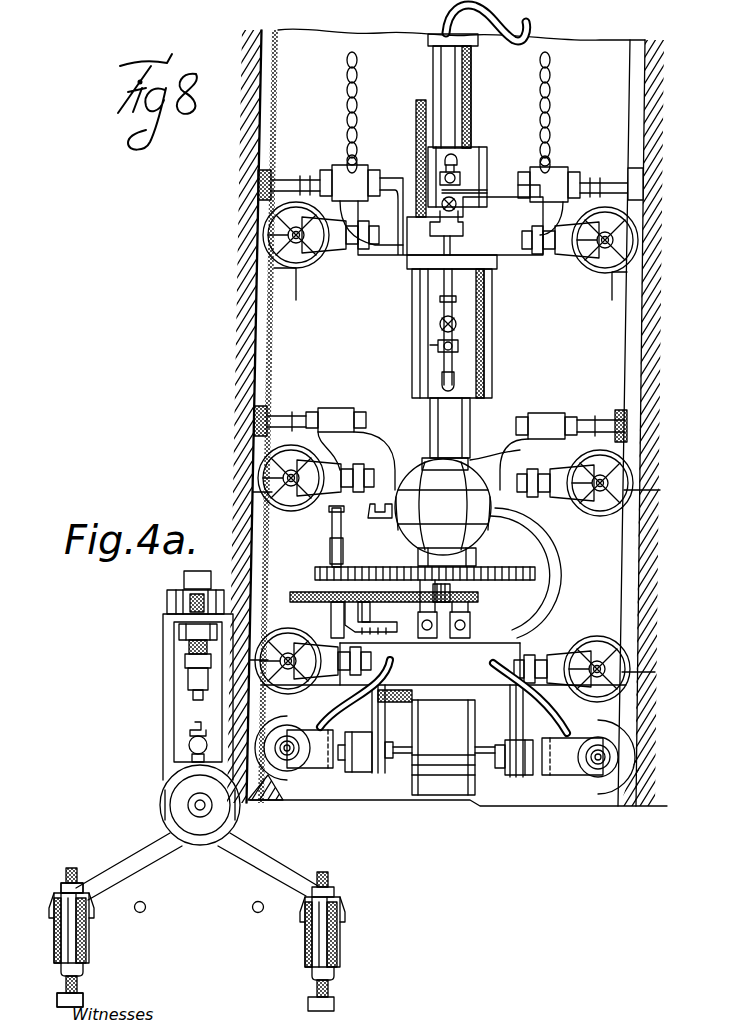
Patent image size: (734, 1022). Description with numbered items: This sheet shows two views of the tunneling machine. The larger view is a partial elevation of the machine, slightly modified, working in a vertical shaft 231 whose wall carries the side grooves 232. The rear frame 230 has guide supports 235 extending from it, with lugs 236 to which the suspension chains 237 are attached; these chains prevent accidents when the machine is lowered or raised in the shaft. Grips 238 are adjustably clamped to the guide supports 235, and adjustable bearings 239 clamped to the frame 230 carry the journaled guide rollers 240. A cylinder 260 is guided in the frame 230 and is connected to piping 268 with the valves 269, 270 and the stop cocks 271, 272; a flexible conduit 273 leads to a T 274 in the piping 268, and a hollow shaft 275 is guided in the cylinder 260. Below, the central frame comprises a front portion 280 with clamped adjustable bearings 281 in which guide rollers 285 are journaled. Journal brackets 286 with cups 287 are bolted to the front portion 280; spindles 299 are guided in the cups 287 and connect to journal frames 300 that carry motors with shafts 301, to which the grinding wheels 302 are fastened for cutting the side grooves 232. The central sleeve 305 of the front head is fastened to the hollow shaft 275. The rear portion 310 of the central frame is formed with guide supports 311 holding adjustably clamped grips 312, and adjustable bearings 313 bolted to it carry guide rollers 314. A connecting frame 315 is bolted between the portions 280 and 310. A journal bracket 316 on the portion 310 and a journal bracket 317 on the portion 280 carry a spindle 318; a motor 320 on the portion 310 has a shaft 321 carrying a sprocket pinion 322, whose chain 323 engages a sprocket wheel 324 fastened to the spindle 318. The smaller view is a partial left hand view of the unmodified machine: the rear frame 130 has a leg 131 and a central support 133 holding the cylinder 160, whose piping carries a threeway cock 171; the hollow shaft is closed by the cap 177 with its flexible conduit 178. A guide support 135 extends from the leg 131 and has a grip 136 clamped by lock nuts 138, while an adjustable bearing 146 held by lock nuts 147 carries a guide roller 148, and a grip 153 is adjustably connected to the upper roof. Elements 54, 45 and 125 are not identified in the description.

In FIG. 8, the vertical shaft 231 is at (257, 270).
In FIG. 8, the side grooves 232 is at (273, 328).
In FIG. 8, the hollow shaft 275 is at (471, 97).
In FIG. 8, the flexible conduit 273 is at (416, 112).
In FIG. 8, the rear frame 230 is at (475, 208).
In FIG. 8, the stop cock 271 is at (461, 179).
In FIG. 8, the valve 269 is at (457, 206).
In FIG. 8, the T 274 is at (442, 234).
In FIG. 8, the guide supports 235 is at (450, 210).
In FIG. 8, the grips 238 is at (306, 168).
In FIG. 8, the suspension chains 237 is at (347, 104).
In FIG. 8, the lugs 236 is at (358, 160).
In FIG. 8, the adjustable bearings 239 is at (450, 237).
In FIG. 8, the guide rollers 240 is at (296, 268).
In FIG. 8, the cylinder 260 is at (412, 313).
In FIG. 8, the piping 268 is at (456, 299).
In FIG. 8, the valve 270 is at (457, 324).
In FIG. 8, the stop cock 272 is at (459, 347).
In FIG. 8, the guide supports 311 is at (352, 404).
In FIG. 8, the grips 312 is at (302, 408).
In FIG. 8, the adjustable bearings 313 is at (445, 480).
In FIG. 8, the guide rollers 314 is at (253, 482).
In FIG. 8, the rear portion 310 is at (494, 468).
In FIG. 8, the motor 320 is at (443, 512).
In FIG. 8, the sprocket wheel 324 is at (407, 579).
In FIG. 8, the shaft 321 is at (452, 590).
In FIG. 8, the journal bracket 317 is at (330, 612).
In FIG. 8, the journal bracket 316 is at (342, 526).
In FIG. 8, the spindle 318 is at (330, 550).
In FIG. 8, the chain 323 is at (368, 612).
In FIG. 8, the sprocket pinion 322 is at (418, 614).
In FIG. 8, the connecting frame 315 is at (562, 582).
In FIG. 8, the front portion 280 is at (444, 710).
In FIG. 8, the adjustable bearings 281 is at (442, 665).
In FIG. 8, the guide rollers 285 is at (372, 662).
In FIG. 8, the journal brackets 286 is at (372, 720).
In FIG. 8, the spindles 299 is at (445, 753).
In FIG. 8, the cups 287 is at (360, 772).
In FIG. 8, the central sleeve 305 is at (430, 792).
In FIG. 8, the journal frames 300 is at (340, 768).
In FIG. 8, the grinding wheels 302 is at (266, 778).
In FIG. 8, the shafts 301 is at (290, 752).
In FIG. 4A, the grip 153 is at (184, 579).
In FIG. 4A, the adjustable bearing 146 is at (167, 602).
In FIG. 4A, the threeway cock 171 is at (180, 762).
In FIG. 4A, the plate 54 is at (188, 620).
In FIG. 4A, the guide roller 148 is at (189, 644).
In FIG. 4A, the fitting 45 is at (190, 660).
In FIG. 4A, the lock nuts 147 is at (195, 686).
In FIG. 4A, the rear frame 130 is at (225, 703).
In FIG. 4A, the cylinder 160 is at (196, 806).
In FIG. 4A, the flexible conduit 178 is at (188, 806).
In FIG. 4A, the cap 177 is at (190, 824).
In FIG. 4A, the leg 131 is at (258, 860).
In FIG. 4A, the central support 133 is at (177, 895).
In FIG. 4A, the pin 125 is at (252, 909).
In FIG. 4A, the guide support 135 is at (88, 924).
In FIG. 4A, the lock nuts 138 is at (84, 888).
In FIG. 4A, the grip 136 is at (84, 1000).